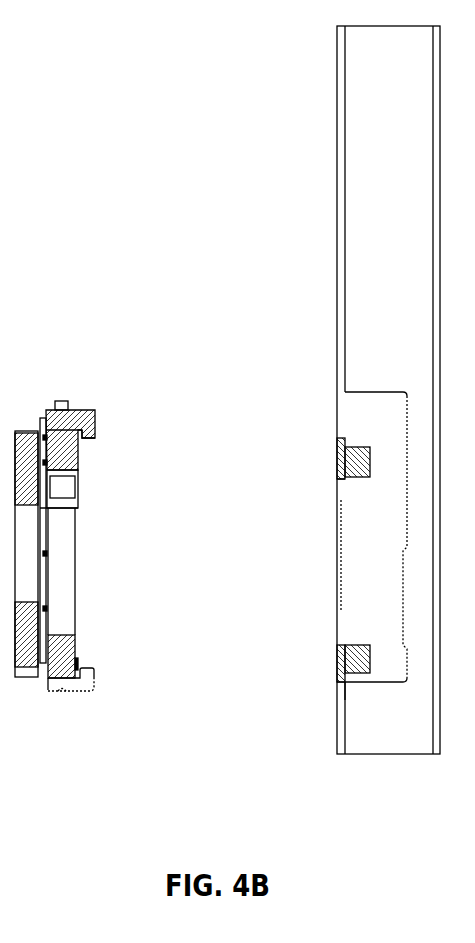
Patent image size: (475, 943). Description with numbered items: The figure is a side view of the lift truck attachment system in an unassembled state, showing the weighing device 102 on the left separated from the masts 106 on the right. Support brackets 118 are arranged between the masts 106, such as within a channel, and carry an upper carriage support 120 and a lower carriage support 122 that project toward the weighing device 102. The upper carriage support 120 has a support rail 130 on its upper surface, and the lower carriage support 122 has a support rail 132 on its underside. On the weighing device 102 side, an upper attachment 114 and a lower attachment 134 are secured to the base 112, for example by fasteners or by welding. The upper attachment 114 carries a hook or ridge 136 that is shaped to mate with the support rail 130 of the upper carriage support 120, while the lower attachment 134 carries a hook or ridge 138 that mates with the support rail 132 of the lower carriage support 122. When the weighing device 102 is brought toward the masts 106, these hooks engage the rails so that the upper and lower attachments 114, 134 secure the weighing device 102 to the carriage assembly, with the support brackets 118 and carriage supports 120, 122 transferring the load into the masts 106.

The weighing device 102 is at (80, 352).
The masts 106 is at (335, 174).
The base 112 is at (78, 572).
The upper attachment 114 is at (93, 410).
The support brackets 118 is at (337, 393).
The upper carriage support 120 is at (340, 478).
The lower carriage support 122 is at (338, 645).
The support rail 130 is at (331, 431).
The support rail 132 is at (332, 692).
The lower attachment 134 is at (76, 692).
The hook or ridge 136 is at (103, 449).
The hook or ridge 138 is at (100, 655).